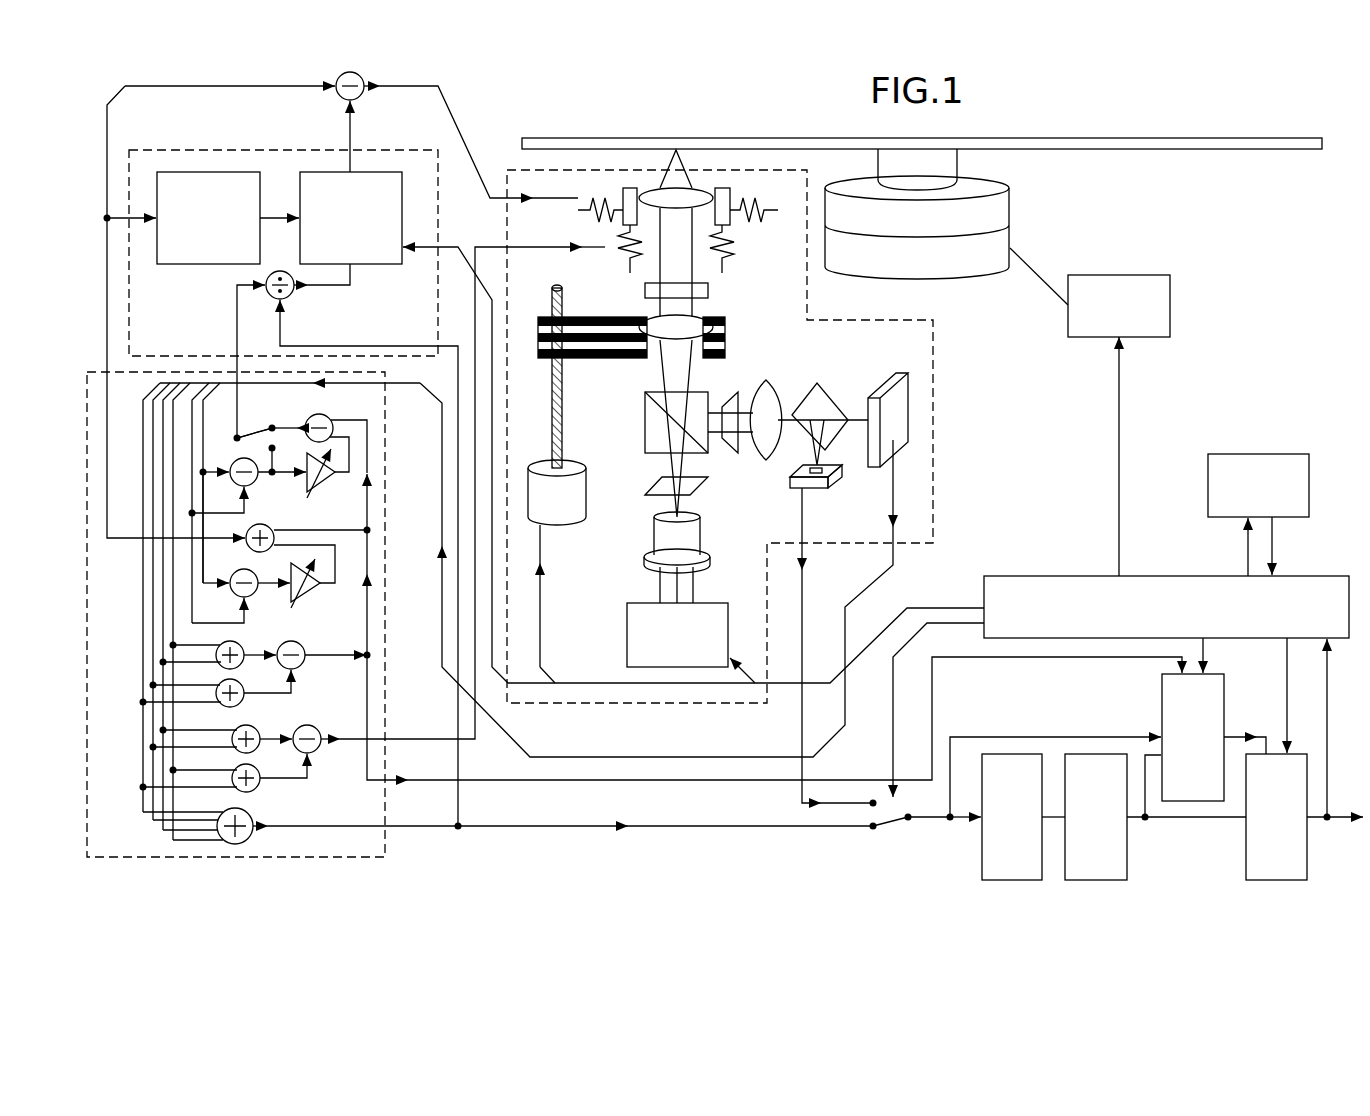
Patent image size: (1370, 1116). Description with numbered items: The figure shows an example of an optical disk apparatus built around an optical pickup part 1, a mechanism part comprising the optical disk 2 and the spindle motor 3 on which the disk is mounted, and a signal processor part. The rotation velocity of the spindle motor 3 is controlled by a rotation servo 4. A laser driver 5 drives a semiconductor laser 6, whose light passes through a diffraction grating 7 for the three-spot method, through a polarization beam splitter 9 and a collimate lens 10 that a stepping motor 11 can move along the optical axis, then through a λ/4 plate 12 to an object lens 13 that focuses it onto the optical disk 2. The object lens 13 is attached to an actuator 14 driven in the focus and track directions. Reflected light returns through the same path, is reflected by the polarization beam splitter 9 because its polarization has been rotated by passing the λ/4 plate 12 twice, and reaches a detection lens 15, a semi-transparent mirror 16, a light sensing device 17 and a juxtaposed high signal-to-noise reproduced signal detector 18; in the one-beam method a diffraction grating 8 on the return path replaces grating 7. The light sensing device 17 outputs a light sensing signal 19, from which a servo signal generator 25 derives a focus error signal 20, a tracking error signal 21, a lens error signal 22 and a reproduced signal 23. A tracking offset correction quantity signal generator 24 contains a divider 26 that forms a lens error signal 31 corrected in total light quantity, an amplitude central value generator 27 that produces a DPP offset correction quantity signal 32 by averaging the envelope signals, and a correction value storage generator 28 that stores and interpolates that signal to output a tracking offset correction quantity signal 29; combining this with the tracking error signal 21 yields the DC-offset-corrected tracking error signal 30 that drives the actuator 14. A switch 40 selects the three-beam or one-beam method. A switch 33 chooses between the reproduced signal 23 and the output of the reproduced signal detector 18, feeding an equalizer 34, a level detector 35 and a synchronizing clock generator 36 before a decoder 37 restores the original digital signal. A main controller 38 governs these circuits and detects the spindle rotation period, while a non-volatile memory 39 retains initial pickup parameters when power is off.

The optical pickup part 1 is at (933, 428).
The optical disk 2 is at (1177, 150).
The spindle motor 3 is at (1010, 210).
The rotation servo 4 is at (1120, 275).
The laser driver 5 is at (627, 637).
The semiconductor laser 6 is at (654, 536).
The diffraction grating 7 is at (648, 488).
The diffraction grating 8 is at (733, 455).
The polarization beam splitter 9 is at (645, 422).
The collimate lens 10 is at (712, 331).
The stepping motor 11 is at (565, 382).
The λ/4 plate 12 is at (645, 291).
The object lens 13 is at (690, 163).
The actuator 14 is at (745, 237).
The detection lens 15 is at (767, 403).
The semi-transparent mirror 16 is at (820, 398).
The light sensing device 17 is at (905, 371).
The reproduced signal detector 18 is at (835, 483).
The light sensing signal 19 is at (845, 606).
The focus error signal 20 is at (433, 739).
The tracking error signal 21 is at (107, 330).
The lens error signal 22 is at (237, 332).
The reproduced signal 23 is at (523, 828).
The tracking offset correction quantity signal generator 24 is at (143, 150).
The servo signal generator 25 is at (232, 857).
The divider 26 is at (292, 301).
The amplitude central value generator 27 is at (185, 265).
The correction value storage generator 28 is at (390, 265).
The tracking offset correction quantity signal 29 is at (353, 131).
The tracking error signal corrected in DC offset 30 is at (483, 99).
The lens error signal corrected in total light quantity 31 is at (352, 278).
The DPP offset correction quantity signal 32 is at (280, 216).
The switch 33 is at (897, 826).
The equalizer 34 is at (1010, 881).
The level detector 35 is at (1094, 881).
The synchronizing clock generator 36 is at (1161, 700).
The decoder 37 is at (1275, 881).
The main controller 38 is at (1065, 576).
The non-volatile memory 39 is at (1263, 451).
The switch 40 is at (248, 427).